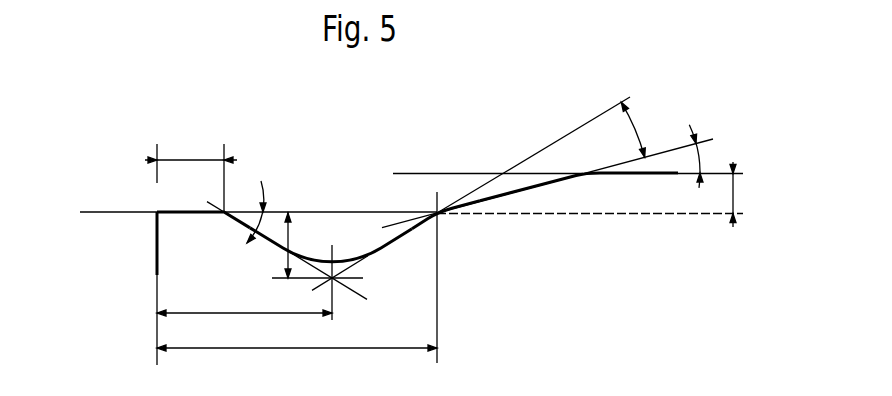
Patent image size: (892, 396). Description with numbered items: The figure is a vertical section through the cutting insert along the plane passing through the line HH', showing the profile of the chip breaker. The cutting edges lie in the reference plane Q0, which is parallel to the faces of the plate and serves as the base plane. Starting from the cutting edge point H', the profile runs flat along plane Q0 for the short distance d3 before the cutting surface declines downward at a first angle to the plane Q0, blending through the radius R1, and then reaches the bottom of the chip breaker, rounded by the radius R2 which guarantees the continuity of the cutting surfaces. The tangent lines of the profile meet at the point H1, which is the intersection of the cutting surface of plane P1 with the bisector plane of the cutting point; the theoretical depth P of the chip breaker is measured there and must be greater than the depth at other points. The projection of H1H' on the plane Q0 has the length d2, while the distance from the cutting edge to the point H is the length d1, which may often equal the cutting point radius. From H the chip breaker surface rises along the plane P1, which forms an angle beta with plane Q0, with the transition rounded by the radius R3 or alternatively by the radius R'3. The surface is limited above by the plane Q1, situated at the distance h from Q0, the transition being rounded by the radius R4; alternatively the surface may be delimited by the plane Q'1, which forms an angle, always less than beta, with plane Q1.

The reference plane Q0 is at (258, 201).
The cutting edge point H' is at (160, 254).
The distance d3 from H' to groove edge d3 is at (191, 176).
The radius at cutting edge transition R1 is at (221, 216).
The radius at chip breaker bottom R2 is at (310, 252).
The theoretical depth of chip breaker P is at (317, 245).
The intersection point H1 is at (325, 282).
The projected length H1H' d2 is at (244, 305).
The length HH' d1 is at (297, 340).
The section line point H is at (427, 277).
The limiting plane Q1 is at (564, 164).
The alternative limiting plane Q'1 is at (563, 208).
The radius at transition to plane P1 R3 is at (453, 216).
The radius at alternative transition R'3 is at (506, 238).
The radius at transition to plane Q1 R4 is at (588, 179).
The chip breaker surface plane P1 is at (576, 125).
The distance between planes h is at (740, 194).